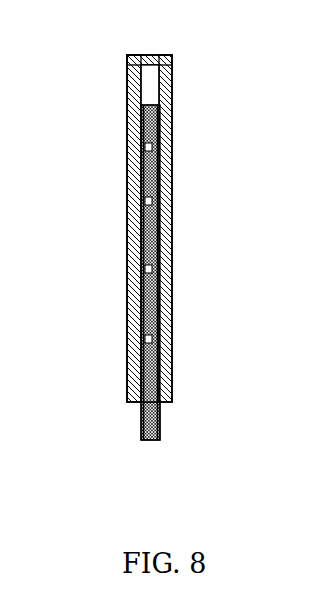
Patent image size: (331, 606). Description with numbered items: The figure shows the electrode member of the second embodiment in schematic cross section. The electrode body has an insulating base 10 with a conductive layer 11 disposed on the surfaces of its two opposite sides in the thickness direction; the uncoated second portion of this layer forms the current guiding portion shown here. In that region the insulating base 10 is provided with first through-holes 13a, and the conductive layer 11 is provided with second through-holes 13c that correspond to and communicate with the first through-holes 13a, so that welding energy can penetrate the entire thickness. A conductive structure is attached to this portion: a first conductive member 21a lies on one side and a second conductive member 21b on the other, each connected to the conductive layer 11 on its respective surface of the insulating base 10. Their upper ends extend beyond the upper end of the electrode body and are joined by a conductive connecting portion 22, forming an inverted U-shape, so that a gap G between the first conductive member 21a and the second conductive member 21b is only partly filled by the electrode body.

The insulating base 10 is at (128, 273).
The conductive layer 11 is at (128, 378).
The first through-hole 13a is at (153, 200).
The second through-hole 13c is at (152, 147).
The first conductive member 21a is at (132, 115).
The second conductive member 21b is at (172, 256).
The conductive connecting portion 22 is at (129, 57).
The gap G is at (150, 92).